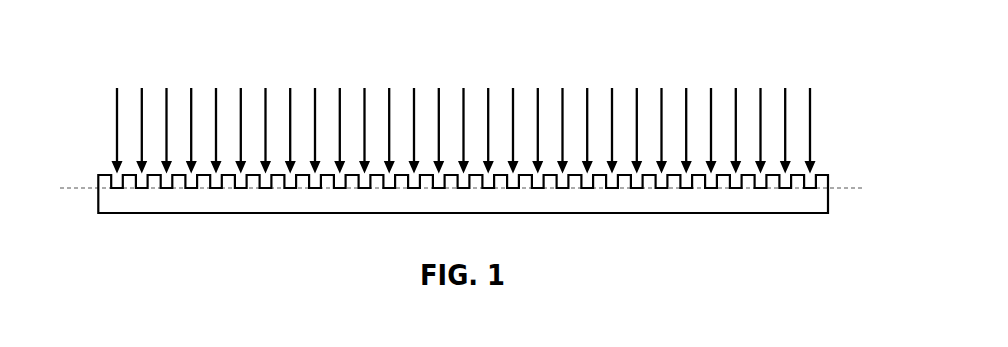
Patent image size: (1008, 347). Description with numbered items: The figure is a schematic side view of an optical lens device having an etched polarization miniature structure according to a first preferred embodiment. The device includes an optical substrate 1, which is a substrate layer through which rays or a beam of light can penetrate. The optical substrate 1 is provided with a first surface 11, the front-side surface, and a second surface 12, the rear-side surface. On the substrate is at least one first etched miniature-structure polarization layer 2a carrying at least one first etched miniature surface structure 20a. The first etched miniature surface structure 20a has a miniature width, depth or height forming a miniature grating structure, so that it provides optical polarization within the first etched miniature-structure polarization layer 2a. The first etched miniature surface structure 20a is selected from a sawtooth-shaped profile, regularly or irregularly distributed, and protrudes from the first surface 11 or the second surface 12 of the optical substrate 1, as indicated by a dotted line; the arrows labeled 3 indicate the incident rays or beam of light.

The optical substrate 1 is at (808, 207).
The first etched miniature-structure polarization layer 2a is at (747, 193).
The first etched miniature surface structure 20a is at (649, 182).
The first surface 11 is at (107, 173).
The second surface 12 is at (107, 213).
The incident light 3 is at (580, 78).